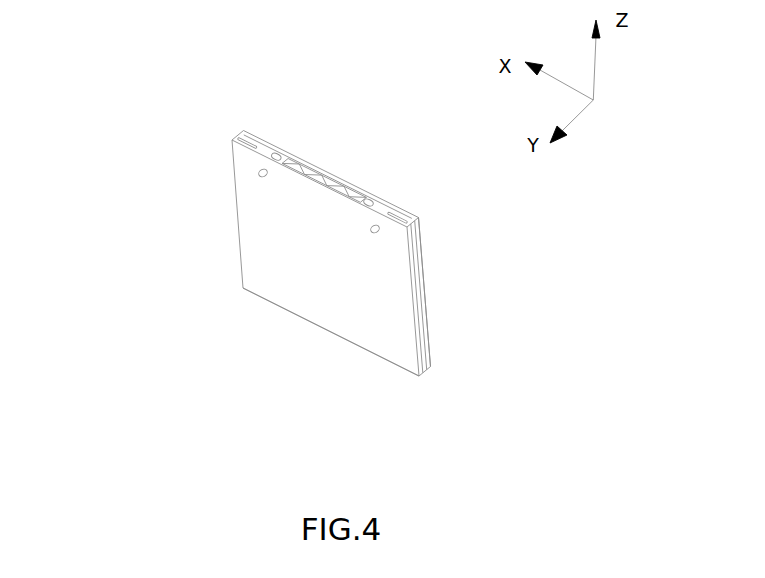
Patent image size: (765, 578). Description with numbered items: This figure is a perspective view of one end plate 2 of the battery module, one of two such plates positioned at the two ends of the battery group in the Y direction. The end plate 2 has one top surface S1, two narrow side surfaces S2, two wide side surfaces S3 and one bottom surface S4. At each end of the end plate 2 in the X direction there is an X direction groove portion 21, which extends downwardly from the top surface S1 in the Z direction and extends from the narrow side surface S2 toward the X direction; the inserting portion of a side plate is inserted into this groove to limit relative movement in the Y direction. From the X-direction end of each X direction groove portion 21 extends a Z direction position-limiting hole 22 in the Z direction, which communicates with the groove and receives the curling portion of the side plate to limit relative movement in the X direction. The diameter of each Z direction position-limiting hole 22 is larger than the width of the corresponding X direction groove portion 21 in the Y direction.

The end plate 2 is at (289, 239).
The X direction groove portion 21 is at (413, 221).
The Z direction position-limiting hole 22 is at (389, 215).
The top surface S1 is at (267, 150).
The narrow side surface S2 is at (428, 278).
The wide side surface S3 is at (300, 303).
The bottom surface S4 is at (384, 362).